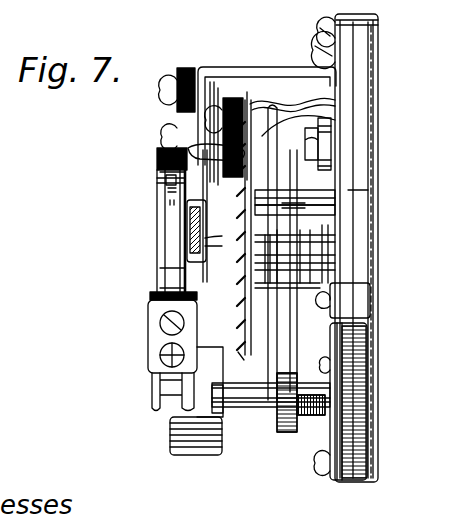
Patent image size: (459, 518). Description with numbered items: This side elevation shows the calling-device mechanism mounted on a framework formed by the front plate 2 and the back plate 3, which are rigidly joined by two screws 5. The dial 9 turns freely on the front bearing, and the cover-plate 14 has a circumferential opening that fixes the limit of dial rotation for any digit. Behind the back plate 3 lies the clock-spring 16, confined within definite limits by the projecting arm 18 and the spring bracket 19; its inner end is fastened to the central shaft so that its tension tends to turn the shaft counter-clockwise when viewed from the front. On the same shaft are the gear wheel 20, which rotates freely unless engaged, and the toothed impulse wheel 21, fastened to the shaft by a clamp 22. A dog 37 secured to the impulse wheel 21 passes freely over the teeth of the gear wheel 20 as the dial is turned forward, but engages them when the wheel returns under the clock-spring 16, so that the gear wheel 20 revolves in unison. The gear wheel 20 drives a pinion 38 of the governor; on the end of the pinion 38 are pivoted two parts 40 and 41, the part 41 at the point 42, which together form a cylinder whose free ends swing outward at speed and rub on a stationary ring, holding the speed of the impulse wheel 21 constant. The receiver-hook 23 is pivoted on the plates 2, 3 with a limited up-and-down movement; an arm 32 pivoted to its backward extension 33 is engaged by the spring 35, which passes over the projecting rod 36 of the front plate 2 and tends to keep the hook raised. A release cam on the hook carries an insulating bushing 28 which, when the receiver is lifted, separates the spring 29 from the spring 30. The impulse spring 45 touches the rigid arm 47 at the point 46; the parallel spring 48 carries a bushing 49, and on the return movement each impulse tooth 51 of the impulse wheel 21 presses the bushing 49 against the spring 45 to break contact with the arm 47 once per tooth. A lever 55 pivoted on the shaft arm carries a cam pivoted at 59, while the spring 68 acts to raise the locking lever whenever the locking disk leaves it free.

The front plate 2 is at (337, 283).
The back plate 3 is at (165, 288).
The screws 5 is at (327, 57).
The dial 9 is at (355, 147).
The cover-plate 14 is at (372, 170).
The clock-spring 16 is at (172, 252).
The projecting arm 18 is at (165, 199).
The spring bracket 19 is at (167, 188).
The gear wheel 20 is at (300, 95).
The impulse wheel 21 is at (170, 274).
The clamp 22 is at (243, 272).
The receiver-hook 23 is at (195, 234).
The insulating bushing 28 is at (157, 151).
The spring 29 is at (172, 178).
The spring 30 is at (172, 230).
The arm 32 is at (330, 350).
The backward extension 33 is at (357, 190).
The spring 35 is at (291, 432).
The projecting rod 36 is at (312, 418).
The dog 37 is at (160, 180).
The pinion 38 is at (263, 408).
The part 40 is at (207, 446).
The part 41 is at (180, 385).
The pivotal point 42 is at (223, 413).
The impulse spring 45 is at (224, 84).
The contact point 46 is at (194, 136).
The rigid arm 47 is at (188, 148).
The spring 48 is at (244, 99).
The bushing 49 is at (268, 108).
The impulse tooth 51 is at (240, 362).
The lever 55 is at (330, 126).
The pivot 59 is at (174, 412).
The spring 68 is at (323, 360).